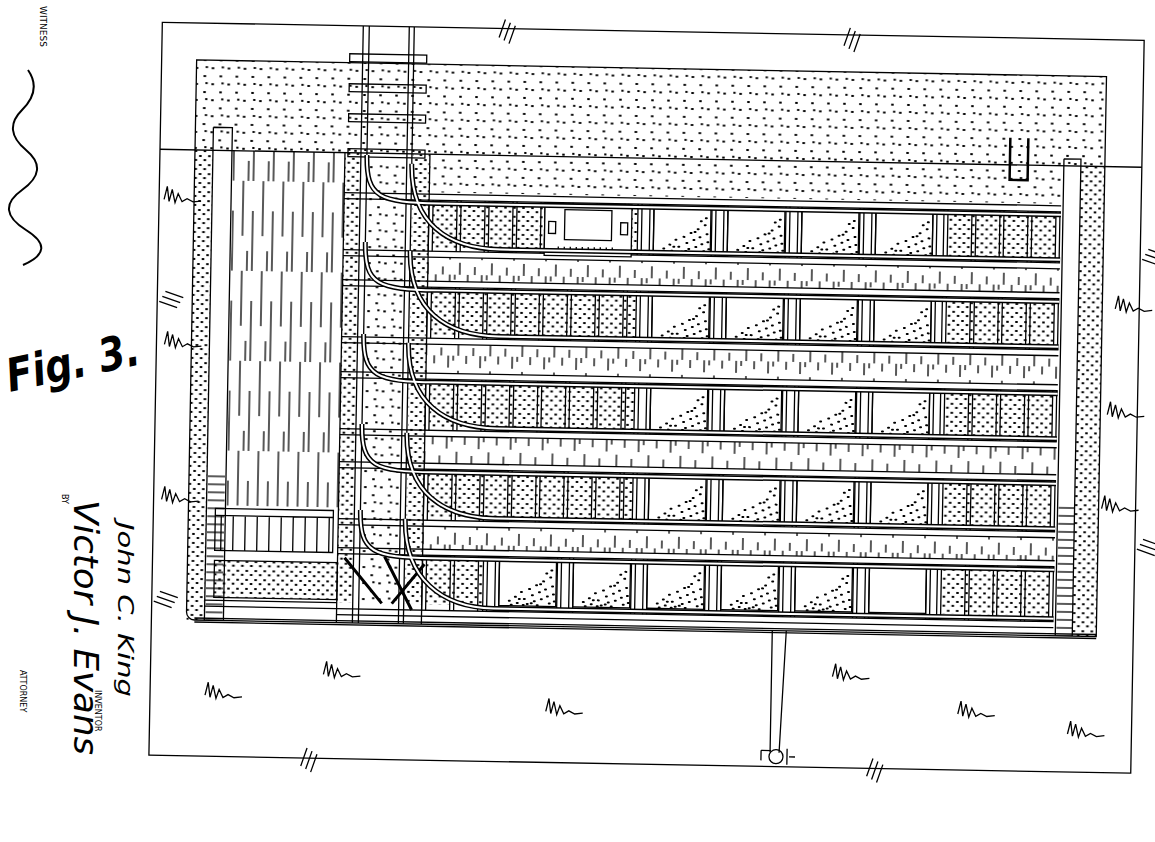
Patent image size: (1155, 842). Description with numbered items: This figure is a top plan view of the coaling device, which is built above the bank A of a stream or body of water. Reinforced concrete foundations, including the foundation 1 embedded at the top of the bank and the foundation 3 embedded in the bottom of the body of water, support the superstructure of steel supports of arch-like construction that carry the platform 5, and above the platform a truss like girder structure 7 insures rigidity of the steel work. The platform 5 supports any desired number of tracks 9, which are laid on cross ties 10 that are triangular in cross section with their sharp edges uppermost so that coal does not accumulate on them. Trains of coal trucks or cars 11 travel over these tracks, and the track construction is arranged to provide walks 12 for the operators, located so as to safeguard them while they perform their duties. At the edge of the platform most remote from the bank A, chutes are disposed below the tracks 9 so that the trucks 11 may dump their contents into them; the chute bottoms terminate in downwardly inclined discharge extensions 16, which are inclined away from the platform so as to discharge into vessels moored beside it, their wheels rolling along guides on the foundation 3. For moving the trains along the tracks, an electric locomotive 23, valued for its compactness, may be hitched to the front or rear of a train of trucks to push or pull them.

The reinforced concrete foundation 1 is at (908, 70).
The bank A is at (651, 97).
The reinforced concrete foundation 3 is at (203, 626).
The platform 5 is at (300, 398).
The truss like girder structure 7 is at (1082, 349).
The tracks 9 is at (538, 198).
The cross ties 10 is at (710, 192).
The coal trucks or cars 11 is at (948, 622).
The walks 12 is at (741, 410).
The discharge extensions 16 is at (782, 677).
The electric locomotive 23 is at (595, 212).